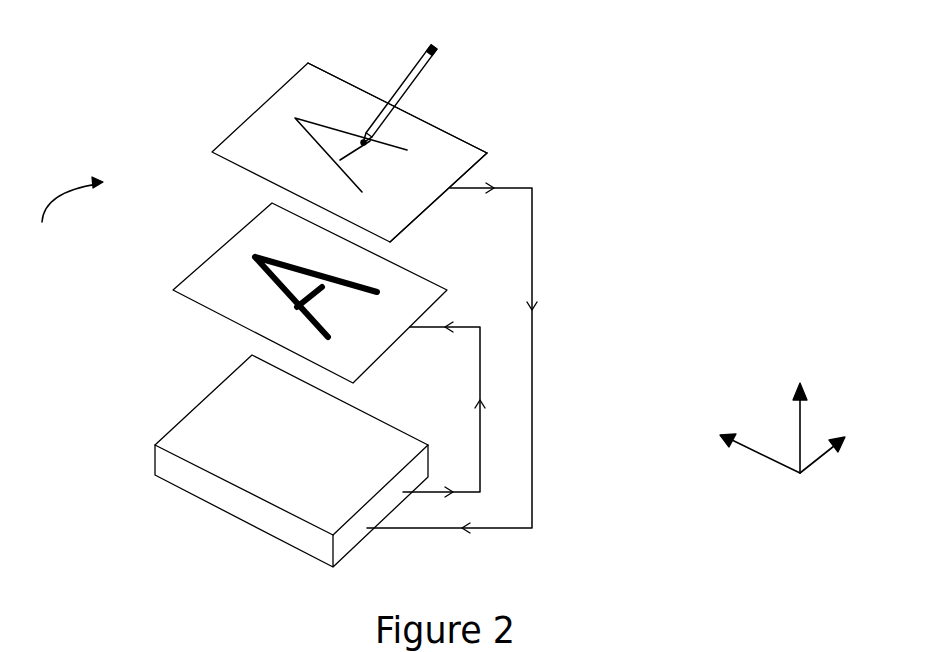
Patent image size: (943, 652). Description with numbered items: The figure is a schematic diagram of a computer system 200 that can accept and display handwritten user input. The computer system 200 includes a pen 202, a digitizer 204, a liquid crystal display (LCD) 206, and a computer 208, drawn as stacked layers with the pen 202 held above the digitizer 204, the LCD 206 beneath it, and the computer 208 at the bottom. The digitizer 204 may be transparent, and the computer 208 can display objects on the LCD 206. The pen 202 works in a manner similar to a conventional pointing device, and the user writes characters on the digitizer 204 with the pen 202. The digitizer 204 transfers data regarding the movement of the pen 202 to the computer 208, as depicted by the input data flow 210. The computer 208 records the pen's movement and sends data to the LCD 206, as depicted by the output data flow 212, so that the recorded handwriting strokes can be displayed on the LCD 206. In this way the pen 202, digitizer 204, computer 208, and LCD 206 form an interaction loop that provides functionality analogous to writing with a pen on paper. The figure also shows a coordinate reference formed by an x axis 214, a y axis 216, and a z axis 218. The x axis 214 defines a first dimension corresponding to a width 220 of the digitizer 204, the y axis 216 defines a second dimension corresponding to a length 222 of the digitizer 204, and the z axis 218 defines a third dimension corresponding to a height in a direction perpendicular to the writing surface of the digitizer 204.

The computer system 200 is at (64, 213).
The pen 202 is at (413, 77).
The digitizer 204 is at (319, 152).
The liquid crystal display (LCD) 206 is at (295, 293).
The computer 208 is at (255, 461).
The input data flow 210 is at (501, 358).
The output data flow 212 is at (444, 409).
The x axis 214 is at (843, 440).
The y axis 216 is at (741, 440).
The z axis 218 is at (800, 404).
The width 220 is at (430, 206).
The length 222 is at (425, 122).